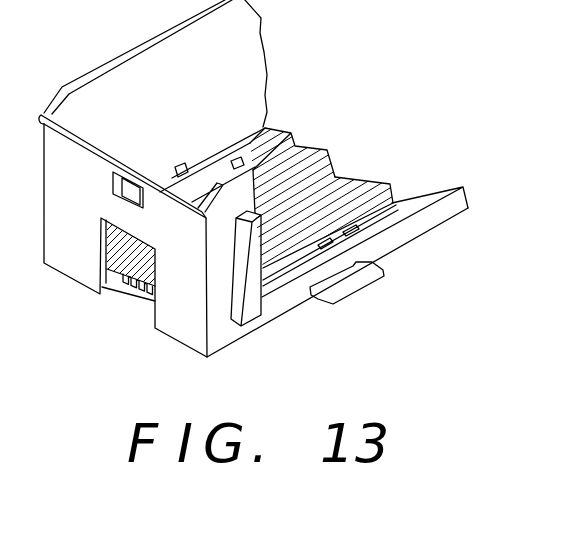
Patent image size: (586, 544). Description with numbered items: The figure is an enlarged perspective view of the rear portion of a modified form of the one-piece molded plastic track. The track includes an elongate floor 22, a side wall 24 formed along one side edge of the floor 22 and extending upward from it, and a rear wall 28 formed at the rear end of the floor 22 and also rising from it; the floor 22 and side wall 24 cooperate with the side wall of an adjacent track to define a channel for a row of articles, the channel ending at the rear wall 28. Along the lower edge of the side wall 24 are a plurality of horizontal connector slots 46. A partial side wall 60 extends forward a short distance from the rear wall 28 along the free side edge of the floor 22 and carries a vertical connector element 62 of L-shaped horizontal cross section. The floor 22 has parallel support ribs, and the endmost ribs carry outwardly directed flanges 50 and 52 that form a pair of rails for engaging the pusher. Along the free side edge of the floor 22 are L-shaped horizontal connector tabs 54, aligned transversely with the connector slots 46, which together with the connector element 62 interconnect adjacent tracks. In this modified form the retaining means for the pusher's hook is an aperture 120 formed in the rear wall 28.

The floor 22 is at (315, 201).
The side wall 24 is at (222, 130).
The rear wall 28 is at (92, 215).
The horizontal connector slots 46 is at (184, 167).
The flange 50 is at (264, 130).
The flange 52 is at (392, 205).
The L-shaped horizontal connector tab 54 is at (371, 267).
The partial side wall 60 is at (215, 333).
The vertical connector element 62 is at (250, 300).
The aperture 120 is at (130, 181).